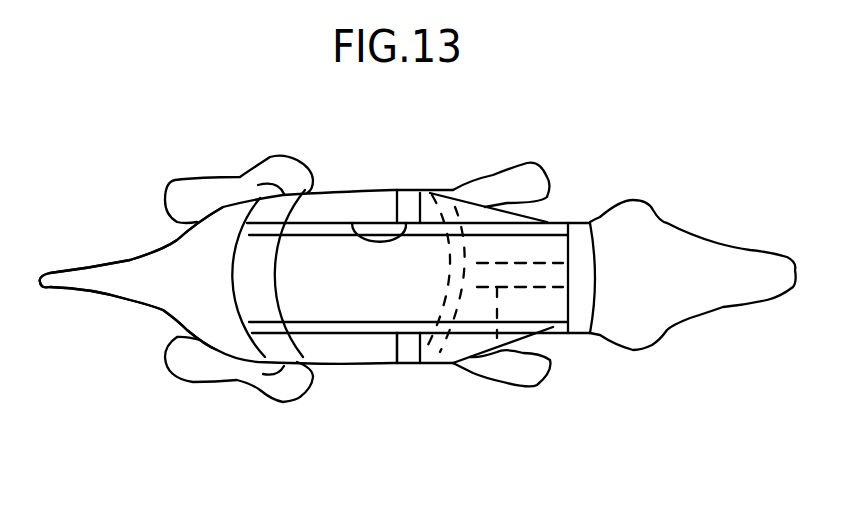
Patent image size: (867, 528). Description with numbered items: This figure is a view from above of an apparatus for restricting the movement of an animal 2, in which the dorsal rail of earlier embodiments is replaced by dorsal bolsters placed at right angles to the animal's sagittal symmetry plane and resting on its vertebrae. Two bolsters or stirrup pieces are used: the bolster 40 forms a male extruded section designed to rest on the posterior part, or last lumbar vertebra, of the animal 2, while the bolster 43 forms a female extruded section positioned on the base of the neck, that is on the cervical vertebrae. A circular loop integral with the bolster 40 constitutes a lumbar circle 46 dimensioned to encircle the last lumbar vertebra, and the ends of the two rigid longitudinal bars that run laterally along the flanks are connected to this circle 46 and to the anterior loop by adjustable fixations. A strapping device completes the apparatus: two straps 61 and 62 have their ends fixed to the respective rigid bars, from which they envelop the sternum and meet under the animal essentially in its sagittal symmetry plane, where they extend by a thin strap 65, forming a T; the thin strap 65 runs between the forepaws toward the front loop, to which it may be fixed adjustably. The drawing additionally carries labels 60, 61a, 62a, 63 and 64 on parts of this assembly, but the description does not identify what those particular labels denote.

The animal 2 is at (689, 204).
The bolster 40 is at (248, 278).
The bolster 43 is at (580, 278).
The lumbar circle 46 is at (277, 342).
The plate 60 is at (347, 348).
The strap 61 is at (407, 350).
The rail edge 61a is at (390, 340).
The strap 62 is at (407, 190).
The hook of slider 62a is at (352, 223).
The lower articular process 63 is at (552, 328).
The upper articular process 64 is at (560, 228).
The thin strap 65 is at (478, 340).